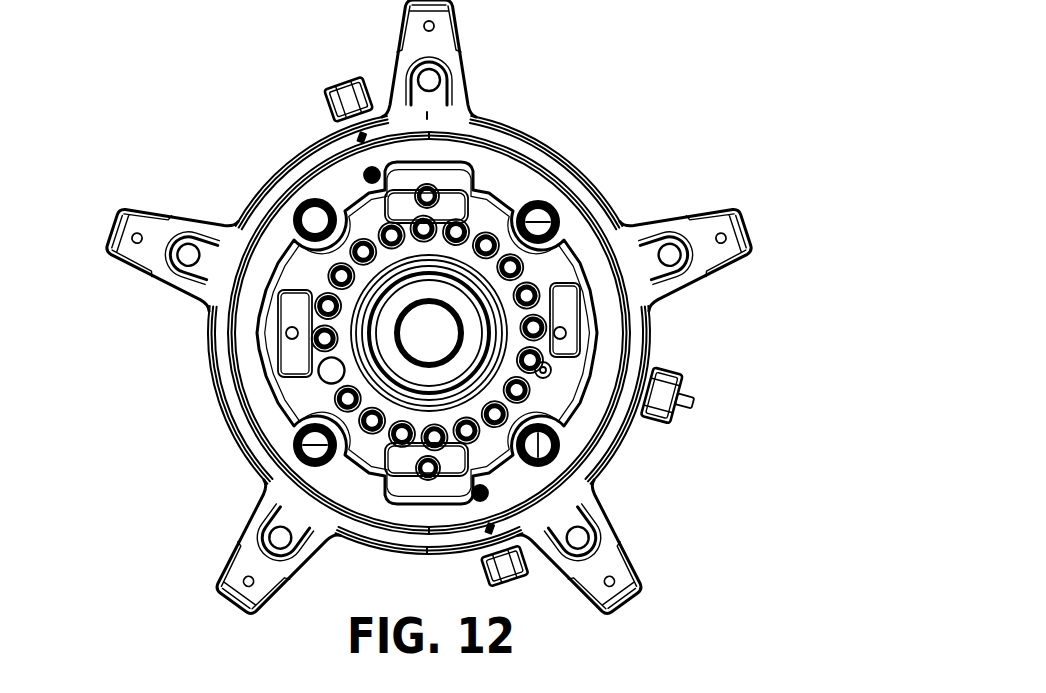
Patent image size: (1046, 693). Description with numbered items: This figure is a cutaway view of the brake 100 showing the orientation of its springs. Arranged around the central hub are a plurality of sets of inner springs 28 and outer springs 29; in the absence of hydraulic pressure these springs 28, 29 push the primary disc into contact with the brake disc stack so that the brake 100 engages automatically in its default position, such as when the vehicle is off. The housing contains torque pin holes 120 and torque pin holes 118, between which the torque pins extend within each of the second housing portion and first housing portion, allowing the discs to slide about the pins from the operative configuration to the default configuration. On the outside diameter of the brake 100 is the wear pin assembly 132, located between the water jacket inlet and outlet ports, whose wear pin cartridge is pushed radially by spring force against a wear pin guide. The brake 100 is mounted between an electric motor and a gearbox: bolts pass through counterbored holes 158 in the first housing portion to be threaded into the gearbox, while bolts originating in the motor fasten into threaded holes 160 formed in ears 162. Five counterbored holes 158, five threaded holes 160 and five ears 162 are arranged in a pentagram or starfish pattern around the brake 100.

The brake 100 is at (188, 118).
The torque pin hole 120 is at (427, 196).
The inner spring 28 is at (485, 188).
The outer spring 29 is at (359, 284).
The ear 162 is at (733, 212).
The threaded hole 160 is at (723, 240).
The wear pin assembly 132 is at (708, 390).
The torque pin hole 118 is at (288, 342).
The counterbored hole 158 is at (577, 538).